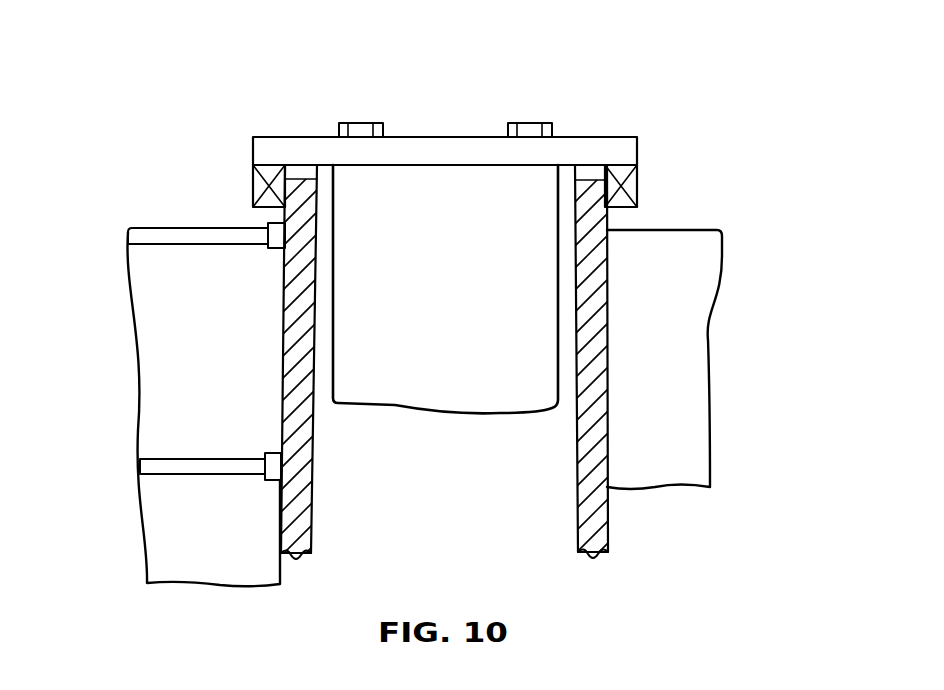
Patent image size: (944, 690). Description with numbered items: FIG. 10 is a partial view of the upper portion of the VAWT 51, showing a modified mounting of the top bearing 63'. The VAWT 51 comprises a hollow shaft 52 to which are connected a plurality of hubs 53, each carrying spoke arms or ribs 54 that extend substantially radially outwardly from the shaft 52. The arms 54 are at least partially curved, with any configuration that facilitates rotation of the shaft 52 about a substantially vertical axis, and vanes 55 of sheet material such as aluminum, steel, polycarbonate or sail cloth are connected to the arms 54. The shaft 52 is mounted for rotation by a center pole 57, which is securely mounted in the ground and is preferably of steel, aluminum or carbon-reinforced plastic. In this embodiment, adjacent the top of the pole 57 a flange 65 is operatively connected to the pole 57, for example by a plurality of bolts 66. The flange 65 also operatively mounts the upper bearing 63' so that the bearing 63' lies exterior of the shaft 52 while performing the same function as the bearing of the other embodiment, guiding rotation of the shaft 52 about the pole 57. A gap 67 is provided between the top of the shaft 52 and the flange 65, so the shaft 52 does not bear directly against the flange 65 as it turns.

The VAWT 51 is at (745, 212).
The hollow shaft 52 is at (593, 258).
The hub 53 is at (270, 462).
The spoke arm 54 is at (173, 240).
The vane 55 is at (170, 372).
The center pole 57 is at (443, 213).
The top bearing 63' is at (441, 142).
The flange 65 is at (276, 153).
The bolt 66 is at (366, 131).
The gap 67 is at (296, 173).